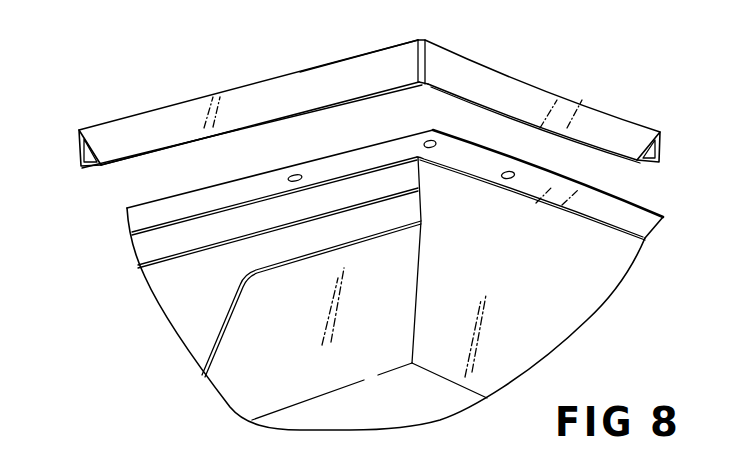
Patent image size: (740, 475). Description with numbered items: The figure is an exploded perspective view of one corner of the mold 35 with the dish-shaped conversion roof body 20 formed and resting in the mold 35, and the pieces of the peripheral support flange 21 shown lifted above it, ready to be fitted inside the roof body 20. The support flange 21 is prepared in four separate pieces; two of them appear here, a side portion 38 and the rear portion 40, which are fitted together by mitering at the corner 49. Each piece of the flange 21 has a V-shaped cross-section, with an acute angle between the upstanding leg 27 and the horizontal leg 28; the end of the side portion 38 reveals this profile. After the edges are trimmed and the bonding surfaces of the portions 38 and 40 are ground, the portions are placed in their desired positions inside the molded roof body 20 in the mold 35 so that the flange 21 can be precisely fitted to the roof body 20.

The roof body 20 is at (593, 301).
The peripheral support flange 21 is at (168, 112).
The upstanding leg 27 is at (79, 156).
The horizontal leg 28 is at (142, 150).
The mold 35 is at (647, 216).
The side portion 38 is at (338, 69).
The rear portion 40 is at (491, 75).
The corner 49 is at (422, 40).